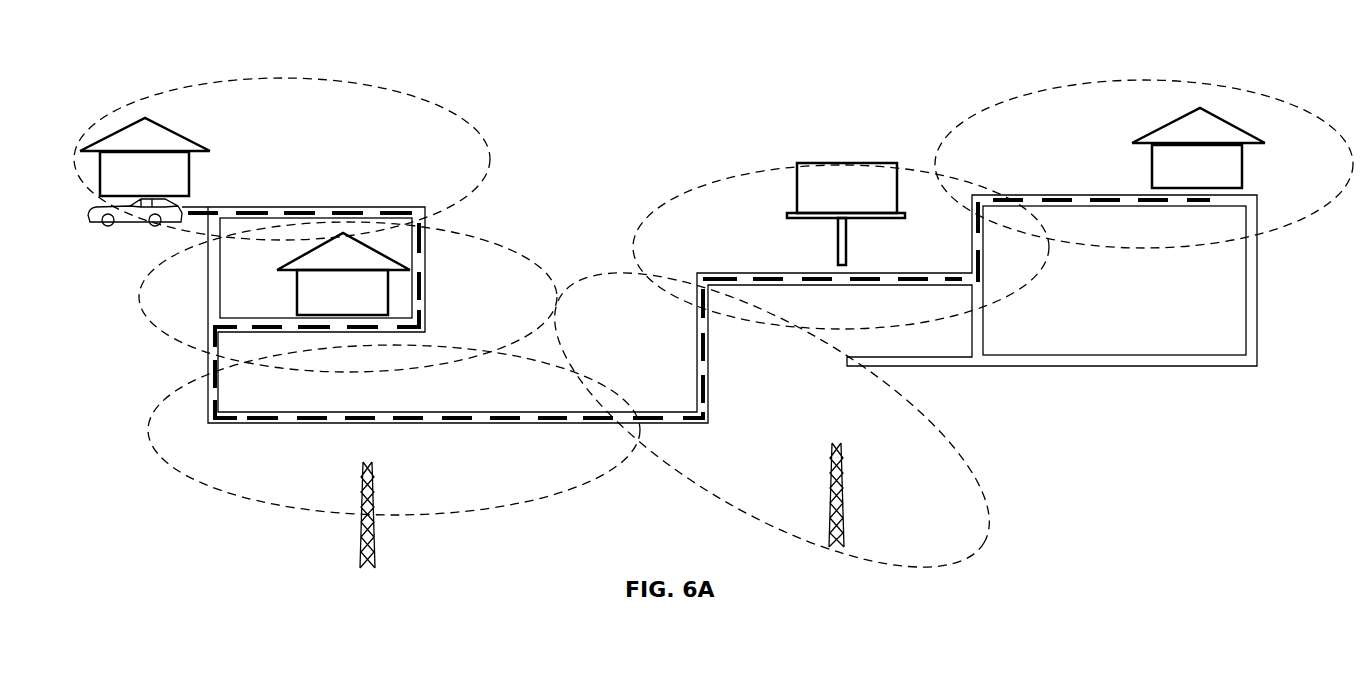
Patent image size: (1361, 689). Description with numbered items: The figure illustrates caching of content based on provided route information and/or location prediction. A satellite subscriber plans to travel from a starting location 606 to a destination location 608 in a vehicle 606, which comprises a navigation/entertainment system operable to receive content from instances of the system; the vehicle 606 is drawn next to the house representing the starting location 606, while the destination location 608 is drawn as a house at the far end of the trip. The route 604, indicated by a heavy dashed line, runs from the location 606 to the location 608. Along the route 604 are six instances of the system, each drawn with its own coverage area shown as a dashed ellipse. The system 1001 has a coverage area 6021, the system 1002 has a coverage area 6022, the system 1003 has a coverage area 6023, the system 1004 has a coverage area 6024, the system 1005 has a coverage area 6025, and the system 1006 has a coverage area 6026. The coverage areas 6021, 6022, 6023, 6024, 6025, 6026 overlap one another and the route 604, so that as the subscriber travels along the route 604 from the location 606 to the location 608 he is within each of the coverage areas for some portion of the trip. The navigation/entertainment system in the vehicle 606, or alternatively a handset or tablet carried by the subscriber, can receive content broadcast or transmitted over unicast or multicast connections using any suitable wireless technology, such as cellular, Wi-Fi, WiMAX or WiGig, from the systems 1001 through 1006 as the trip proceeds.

The system 1001 is at (206, 140).
The system 1002 is at (404, 256).
The system 1003 is at (392, 462).
The system 1004 is at (860, 443).
The system 1005 is at (910, 212).
The system 1006 is at (1253, 132).
The coverage area 6021 is at (280, 79).
The coverage area 6022 is at (510, 246).
The coverage area 6023 is at (205, 484).
The coverage area 6024 is at (877, 562).
The coverage area 6025 is at (717, 180).
The coverage area 6026 is at (992, 105).
The route 604 is at (752, 275).
The location 606 is at (162, 184).
The location 608 is at (1216, 178).